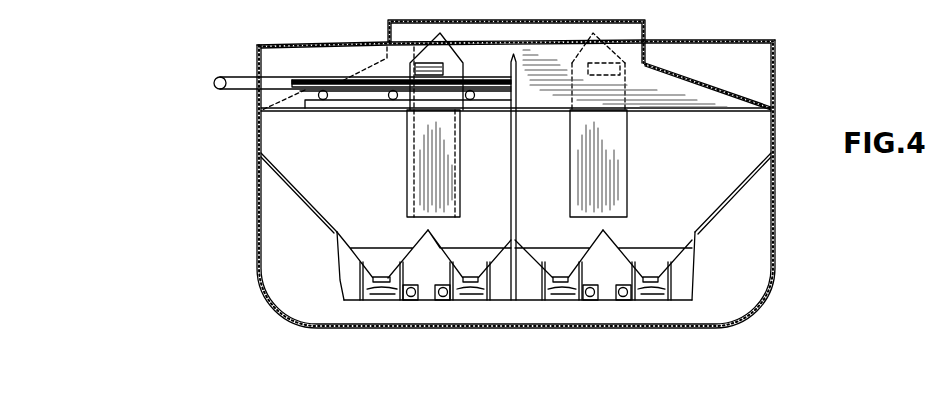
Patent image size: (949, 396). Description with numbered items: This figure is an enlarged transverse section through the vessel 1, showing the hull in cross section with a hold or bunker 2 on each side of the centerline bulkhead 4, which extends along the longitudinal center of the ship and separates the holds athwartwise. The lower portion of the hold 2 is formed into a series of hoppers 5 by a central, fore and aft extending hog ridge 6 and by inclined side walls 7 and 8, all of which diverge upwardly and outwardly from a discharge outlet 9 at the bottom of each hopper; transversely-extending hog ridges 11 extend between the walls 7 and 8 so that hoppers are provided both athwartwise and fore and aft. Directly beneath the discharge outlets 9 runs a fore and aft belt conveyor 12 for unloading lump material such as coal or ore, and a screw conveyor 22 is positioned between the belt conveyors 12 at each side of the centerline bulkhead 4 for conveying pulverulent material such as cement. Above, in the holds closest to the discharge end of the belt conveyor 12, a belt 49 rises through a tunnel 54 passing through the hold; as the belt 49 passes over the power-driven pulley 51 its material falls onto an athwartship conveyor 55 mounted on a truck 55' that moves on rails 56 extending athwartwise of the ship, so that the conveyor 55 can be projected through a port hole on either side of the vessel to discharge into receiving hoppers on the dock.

The vessel 1 is at (228, 202).
The hold or bunker 2 is at (686, 172).
The centerline bulkhead 4 is at (517, 171).
The hopper 5 is at (655, 200).
The hog ridge 6 is at (428, 231).
The inclined side wall 7 is at (720, 208).
The inclined side wall 8 is at (302, 202).
The discharge outlet 9 is at (473, 276).
The transversely-extending hog ridge 11 is at (397, 246).
The belt conveyor 12 is at (365, 290).
The screw conveyor 22 is at (411, 300).
The belt 49 is at (430, 63).
The pulley 51 is at (445, 68).
The tunnel 54 is at (460, 148).
The athwartship conveyor 55 is at (358, 71).
The truck 55' is at (401, 70).
The rails 56 is at (338, 102).